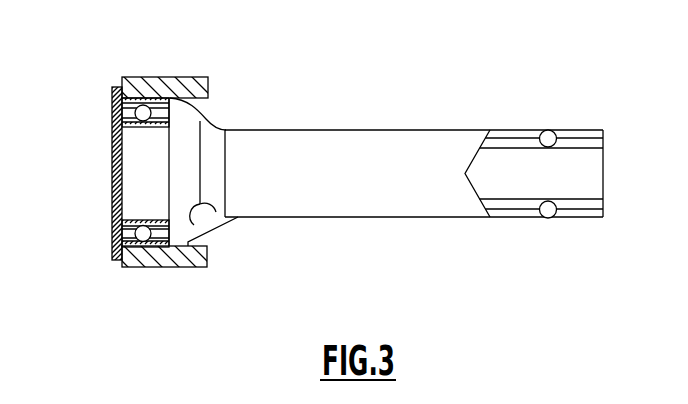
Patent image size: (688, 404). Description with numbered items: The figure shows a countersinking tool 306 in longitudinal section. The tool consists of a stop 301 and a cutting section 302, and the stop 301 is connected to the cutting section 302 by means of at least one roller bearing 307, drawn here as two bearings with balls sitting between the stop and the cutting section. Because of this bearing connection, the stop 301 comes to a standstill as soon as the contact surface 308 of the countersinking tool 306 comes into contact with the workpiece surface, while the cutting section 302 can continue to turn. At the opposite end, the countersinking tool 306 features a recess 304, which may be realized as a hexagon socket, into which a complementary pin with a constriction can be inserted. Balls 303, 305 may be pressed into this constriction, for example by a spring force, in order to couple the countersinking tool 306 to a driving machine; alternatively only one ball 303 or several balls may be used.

The stop 301 is at (201, 84).
The cutting section 302 is at (213, 145).
The ball 303 is at (549, 128).
The recess 304 is at (578, 192).
The ball 305 is at (549, 219).
The countersinking tool 306 is at (440, 202).
The roller bearing 307 is at (143, 113).
The contact surface 308 is at (207, 256).